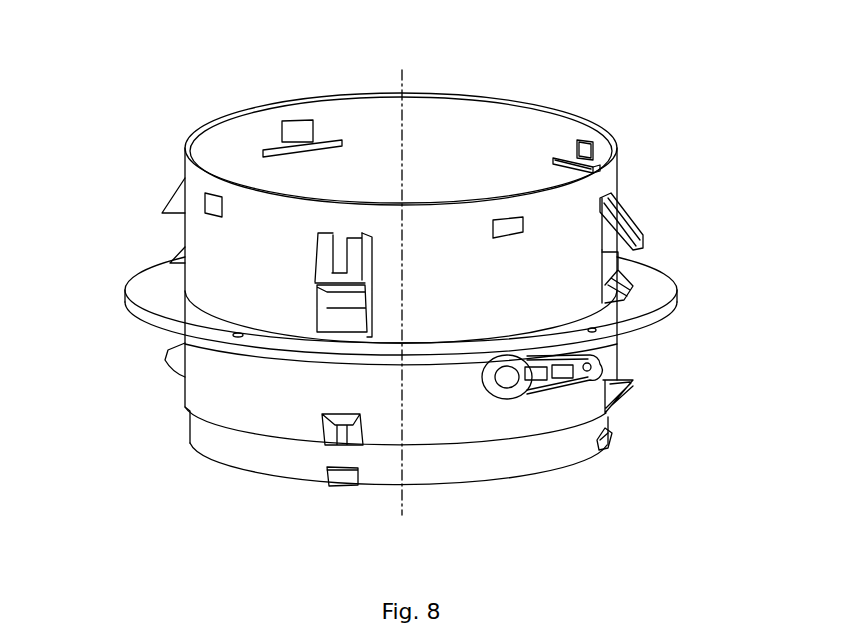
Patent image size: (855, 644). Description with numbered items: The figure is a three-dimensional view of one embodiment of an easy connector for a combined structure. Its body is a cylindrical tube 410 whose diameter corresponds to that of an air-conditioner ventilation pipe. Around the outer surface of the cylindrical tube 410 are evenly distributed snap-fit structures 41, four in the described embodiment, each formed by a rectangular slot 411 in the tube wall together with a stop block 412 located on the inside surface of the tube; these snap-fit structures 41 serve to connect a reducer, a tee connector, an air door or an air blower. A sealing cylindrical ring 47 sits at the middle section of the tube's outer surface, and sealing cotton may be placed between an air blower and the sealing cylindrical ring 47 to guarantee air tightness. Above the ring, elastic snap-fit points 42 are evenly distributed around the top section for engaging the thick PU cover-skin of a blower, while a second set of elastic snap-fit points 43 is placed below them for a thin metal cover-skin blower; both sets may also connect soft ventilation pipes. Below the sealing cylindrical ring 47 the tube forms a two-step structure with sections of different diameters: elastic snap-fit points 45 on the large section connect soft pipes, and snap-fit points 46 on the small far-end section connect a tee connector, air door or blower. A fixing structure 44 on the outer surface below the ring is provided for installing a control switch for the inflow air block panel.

The cylindrical tube 410 is at (465, 105).
The snap-fit structure 41 is at (582, 140).
The rectangular slot 411 is at (592, 152).
The stop block 412 is at (602, 162).
The elastic snap-fit point 42 is at (635, 228).
The elastic snap-fit point 43 is at (620, 287).
The fixing structure 44 is at (592, 372).
The elastic snap-fit point 45 is at (637, 388).
The snap-fit point 46 is at (612, 436).
The sealing cylindrical ring 47 is at (152, 290).